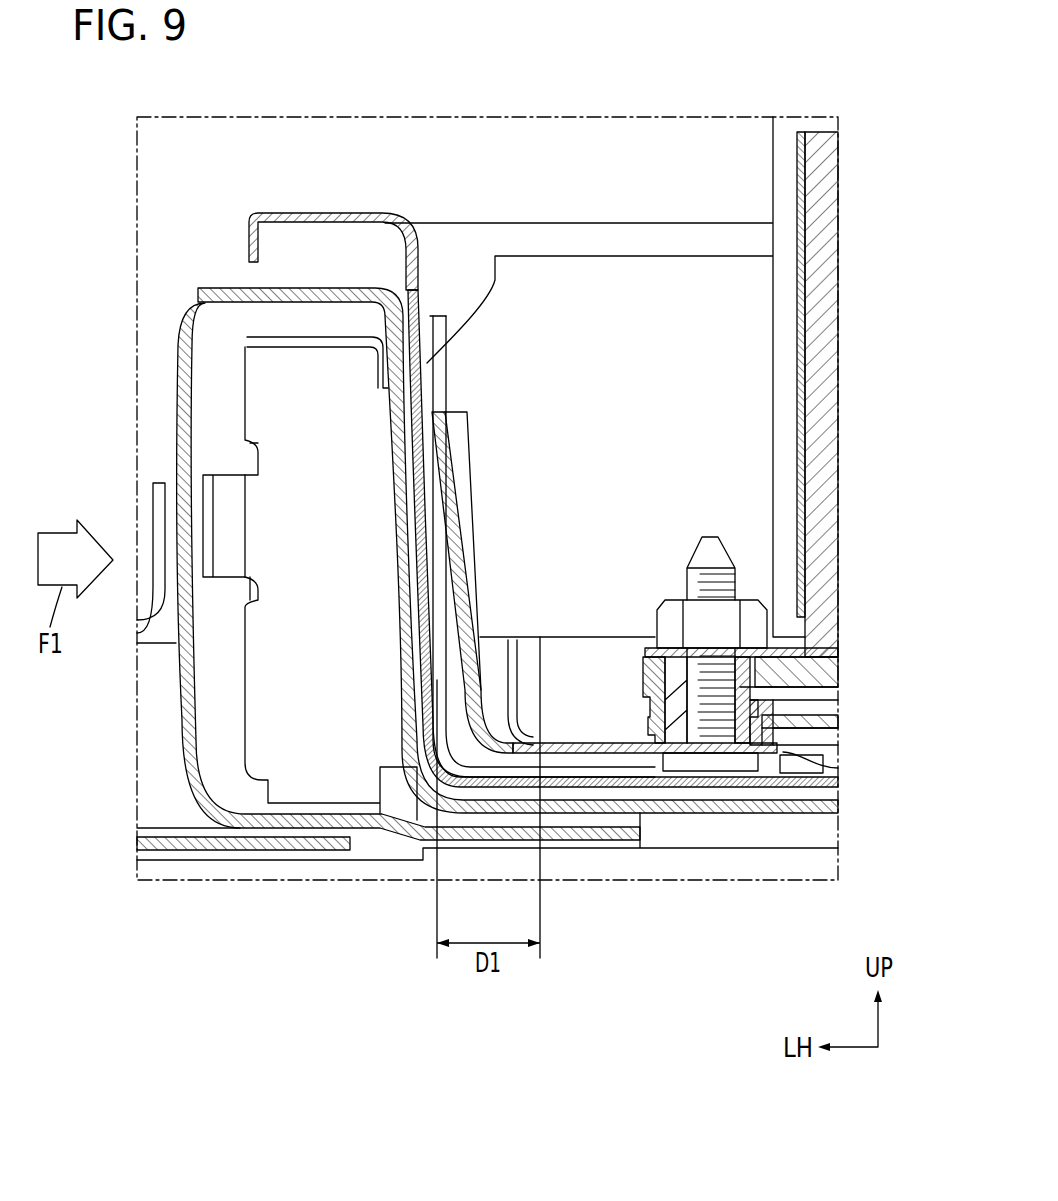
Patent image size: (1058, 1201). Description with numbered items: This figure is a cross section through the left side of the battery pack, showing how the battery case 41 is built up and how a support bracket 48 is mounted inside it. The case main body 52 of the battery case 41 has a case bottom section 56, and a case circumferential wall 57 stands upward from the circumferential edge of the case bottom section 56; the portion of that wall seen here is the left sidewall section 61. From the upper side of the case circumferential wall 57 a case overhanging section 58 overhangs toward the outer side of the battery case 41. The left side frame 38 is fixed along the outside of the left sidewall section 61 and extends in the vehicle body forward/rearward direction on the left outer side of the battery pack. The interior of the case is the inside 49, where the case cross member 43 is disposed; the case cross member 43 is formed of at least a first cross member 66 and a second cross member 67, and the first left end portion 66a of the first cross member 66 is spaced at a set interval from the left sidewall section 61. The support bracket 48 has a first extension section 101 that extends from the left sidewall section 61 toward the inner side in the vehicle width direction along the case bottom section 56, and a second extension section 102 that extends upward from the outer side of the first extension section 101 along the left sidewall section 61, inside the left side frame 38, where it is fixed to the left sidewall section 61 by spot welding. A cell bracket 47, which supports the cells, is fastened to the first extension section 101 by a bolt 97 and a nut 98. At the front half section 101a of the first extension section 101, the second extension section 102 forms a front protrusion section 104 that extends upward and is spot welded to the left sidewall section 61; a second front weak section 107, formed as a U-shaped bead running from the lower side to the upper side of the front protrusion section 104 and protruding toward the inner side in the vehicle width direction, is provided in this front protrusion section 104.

The left side frame 38 is at (178, 408).
The battery case 41 is at (612, 223).
The case cross member 43 is at (437, 722).
The cell bracket 47 is at (812, 668).
The support bracket 48 is at (473, 463).
The inside 49 is at (640, 533).
The case main body 52 is at (595, 407).
The case bottom section 56 is at (788, 790).
The case circumferential wall 57 is at (441, 312).
The case overhanging section 58 is at (338, 212).
The left sidewall section 61 is at (518, 425).
The first cross member 66 is at (560, 681).
The first left end portion 66a is at (557, 727).
The second cross member 67 is at (502, 588).
The bolt 97 is at (700, 772).
The nut 98 is at (727, 628).
The first extension section 101 is at (628, 823).
The front half section 101a is at (627, 756).
The second extension section 102 is at (488, 562).
The front protrusion section 104 is at (465, 436).
The second front weak section 107 is at (490, 532).